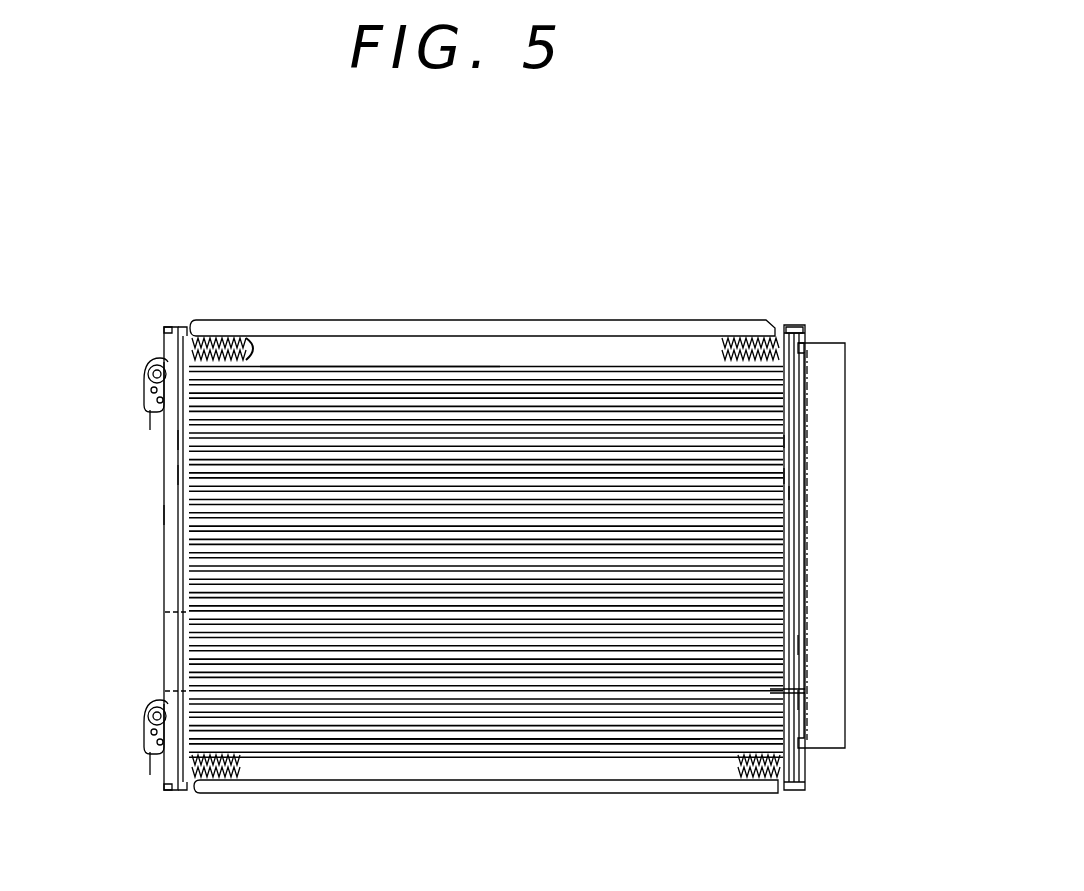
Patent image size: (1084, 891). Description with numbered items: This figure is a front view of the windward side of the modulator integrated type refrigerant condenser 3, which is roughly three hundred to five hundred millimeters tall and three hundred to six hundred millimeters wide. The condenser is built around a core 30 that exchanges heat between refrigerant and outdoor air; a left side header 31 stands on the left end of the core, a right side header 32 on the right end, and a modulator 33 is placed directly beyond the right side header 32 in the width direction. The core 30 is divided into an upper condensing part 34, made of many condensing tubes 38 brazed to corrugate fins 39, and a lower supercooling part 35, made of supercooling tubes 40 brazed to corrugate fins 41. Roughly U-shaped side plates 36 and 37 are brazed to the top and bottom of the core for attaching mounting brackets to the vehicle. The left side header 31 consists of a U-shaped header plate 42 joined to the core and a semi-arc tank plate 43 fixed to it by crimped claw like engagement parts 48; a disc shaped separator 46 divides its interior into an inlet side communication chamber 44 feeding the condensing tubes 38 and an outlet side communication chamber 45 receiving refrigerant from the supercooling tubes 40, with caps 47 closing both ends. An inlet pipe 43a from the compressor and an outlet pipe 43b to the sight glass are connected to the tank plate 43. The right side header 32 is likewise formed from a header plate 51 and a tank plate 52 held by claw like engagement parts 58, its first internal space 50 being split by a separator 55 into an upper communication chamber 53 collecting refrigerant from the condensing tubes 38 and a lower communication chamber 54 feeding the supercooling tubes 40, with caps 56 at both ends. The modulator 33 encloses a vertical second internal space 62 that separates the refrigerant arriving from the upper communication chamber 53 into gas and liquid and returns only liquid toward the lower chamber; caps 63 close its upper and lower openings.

The modulator integrated type refrigerant condenser 3 is at (199, 275).
The core 30 is at (620, 302).
The left side header 31 is at (165, 566).
The right side header 32 is at (812, 766).
The modulator 33 is at (846, 388).
The condensing part 34 is at (500, 366).
The supercooling part 35 is at (532, 745).
The side plate 36 is at (437, 330).
The side plate 37 is at (600, 788).
The condensing tubes 38 is at (375, 362).
The corrugate fins 39 is at (255, 354).
The supercooling tubes 40 is at (460, 756).
The corrugate fins 41 is at (232, 772).
The header plate 42 is at (180, 476).
The tank plate 43 is at (165, 515).
The inlet pipe 43a is at (150, 368).
The outlet pipe 43b is at (150, 718).
The inlet side communication chamber 44 is at (178, 612).
The outlet side communication chamber 45 is at (170, 766).
The separator 46 is at (186, 690).
The caps 47 is at (170, 326).
The claw like engagement parts 48 is at (180, 440).
The first internal space 50 is at (890, 617).
The header plate 51 is at (780, 476).
The tank plate 52 is at (790, 492).
The upper communication chamber 53 is at (800, 643).
The lower communication chamber 54 is at (800, 700).
The separator 55 is at (780, 690).
The caps 56 is at (790, 334).
The claw like engagement parts 58 is at (785, 441).
The second internal space 62 is at (832, 568).
The caps 63 is at (815, 343).